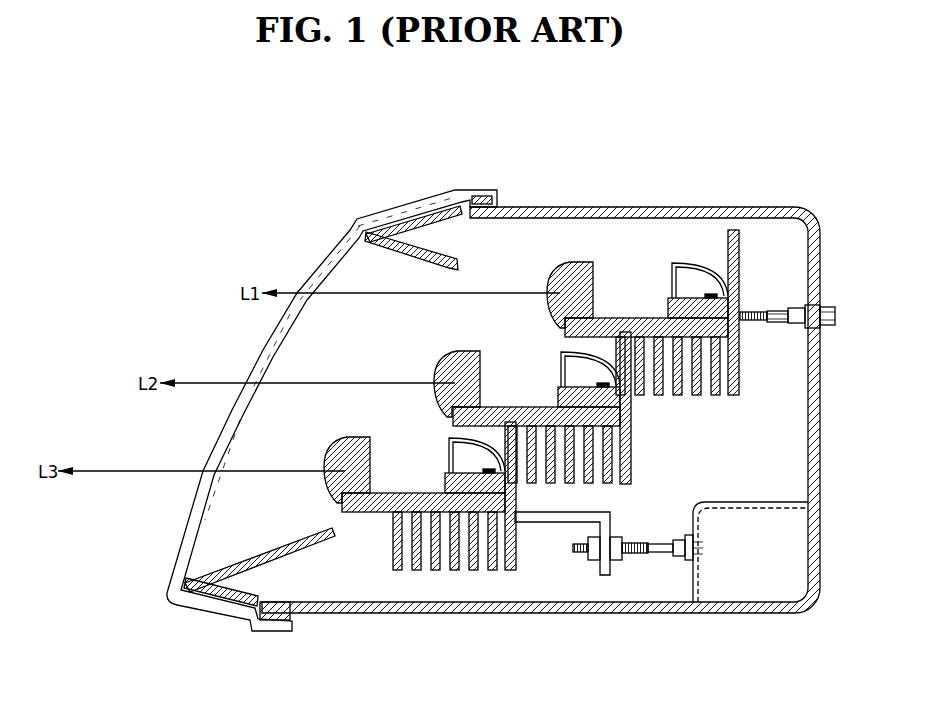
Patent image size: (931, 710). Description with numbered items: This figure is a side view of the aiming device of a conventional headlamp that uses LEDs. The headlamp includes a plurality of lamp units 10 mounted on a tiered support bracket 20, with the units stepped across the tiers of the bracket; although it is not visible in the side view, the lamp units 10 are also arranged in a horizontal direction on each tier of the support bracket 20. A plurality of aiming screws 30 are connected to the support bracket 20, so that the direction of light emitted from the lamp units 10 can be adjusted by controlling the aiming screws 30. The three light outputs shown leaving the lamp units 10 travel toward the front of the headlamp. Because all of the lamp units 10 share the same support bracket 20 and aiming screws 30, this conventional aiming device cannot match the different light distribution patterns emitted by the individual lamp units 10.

The lamp unit 10 is at (448, 358).
The support bracket 20 is at (572, 430).
The aiming screw 30 is at (768, 308).